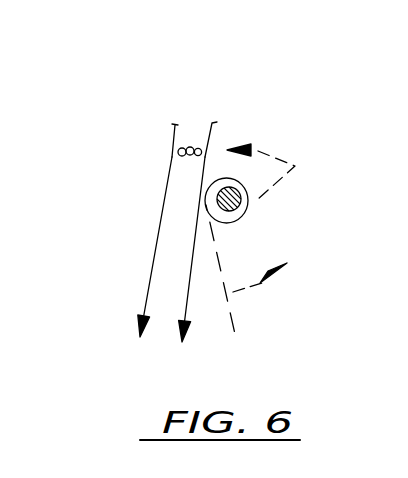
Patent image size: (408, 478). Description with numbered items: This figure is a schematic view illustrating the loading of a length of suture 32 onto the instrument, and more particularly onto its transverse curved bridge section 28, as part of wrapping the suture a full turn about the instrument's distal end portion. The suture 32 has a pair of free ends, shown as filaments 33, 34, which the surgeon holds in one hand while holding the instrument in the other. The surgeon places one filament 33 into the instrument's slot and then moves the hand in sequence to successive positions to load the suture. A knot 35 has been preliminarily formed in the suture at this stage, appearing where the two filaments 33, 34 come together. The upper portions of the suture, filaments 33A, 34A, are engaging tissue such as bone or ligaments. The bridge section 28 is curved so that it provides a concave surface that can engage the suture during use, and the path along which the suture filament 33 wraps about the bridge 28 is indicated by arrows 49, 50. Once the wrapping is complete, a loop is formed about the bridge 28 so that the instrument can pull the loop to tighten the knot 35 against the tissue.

The bridge section 28 is at (238, 212).
The suture 32 is at (167, 193).
The filament 33 is at (182, 300).
The filament 33A is at (212, 126).
The filament 34 is at (145, 287).
The filament 34A is at (171, 132).
The knot 35 is at (191, 150).
The arrow 49 is at (263, 285).
The arrow 50 is at (251, 150).